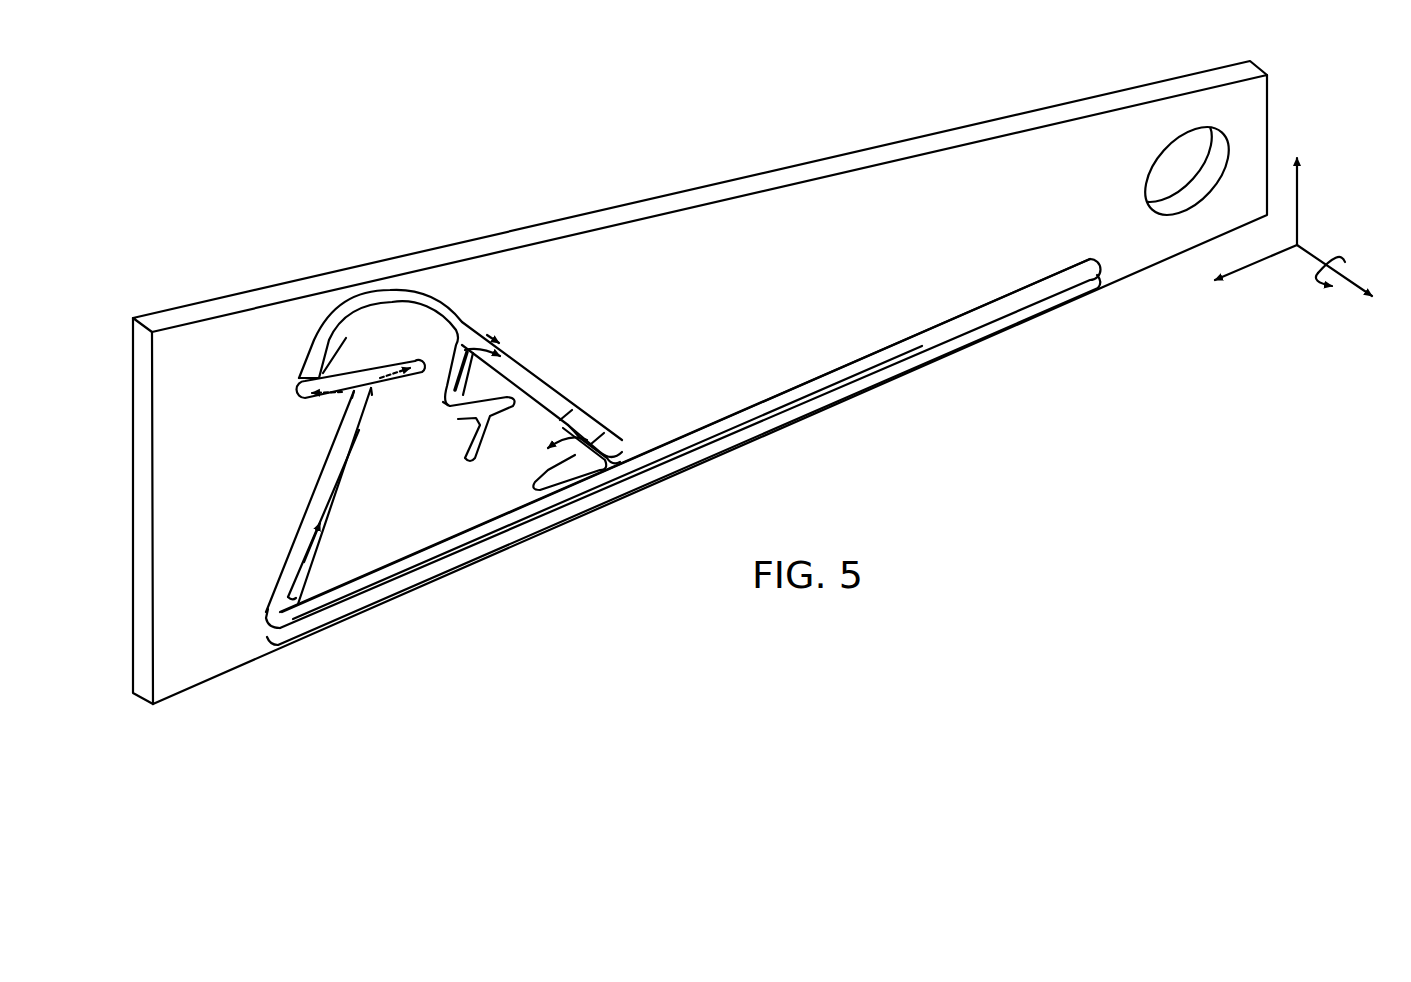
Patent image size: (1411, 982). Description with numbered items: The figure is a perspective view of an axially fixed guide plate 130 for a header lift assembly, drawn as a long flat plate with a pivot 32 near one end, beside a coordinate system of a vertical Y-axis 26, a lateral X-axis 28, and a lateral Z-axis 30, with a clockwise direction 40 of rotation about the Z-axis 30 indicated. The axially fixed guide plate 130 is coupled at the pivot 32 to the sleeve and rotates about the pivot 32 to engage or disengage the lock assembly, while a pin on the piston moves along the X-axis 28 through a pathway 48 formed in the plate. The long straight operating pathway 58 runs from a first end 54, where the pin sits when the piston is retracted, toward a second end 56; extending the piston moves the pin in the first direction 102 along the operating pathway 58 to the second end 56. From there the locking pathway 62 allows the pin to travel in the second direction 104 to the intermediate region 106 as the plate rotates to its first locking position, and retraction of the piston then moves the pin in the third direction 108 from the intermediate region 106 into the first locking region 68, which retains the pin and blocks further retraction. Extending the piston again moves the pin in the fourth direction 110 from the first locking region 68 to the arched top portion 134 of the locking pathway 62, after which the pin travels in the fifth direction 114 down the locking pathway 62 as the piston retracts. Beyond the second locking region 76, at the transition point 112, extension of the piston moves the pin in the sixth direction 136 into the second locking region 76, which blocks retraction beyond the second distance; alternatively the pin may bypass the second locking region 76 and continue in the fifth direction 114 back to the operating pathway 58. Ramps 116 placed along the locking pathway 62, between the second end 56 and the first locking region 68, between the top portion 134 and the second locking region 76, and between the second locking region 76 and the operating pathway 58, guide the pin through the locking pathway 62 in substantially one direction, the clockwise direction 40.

The axially fixed guide plate 130 is at (1020, 140).
The pivot 32 is at (1172, 150).
The Y-axis 26 is at (1297, 202).
The X-axis 28 is at (1255, 264).
The Z-axis 30 is at (1357, 289).
The clockwise direction 40 is at (1347, 262).
The operating pathway 58 is at (684, 430).
The pathway 48 is at (997, 309).
The first direction 102 is at (882, 357).
The first end 54 is at (1080, 266).
The second end 56 is at (262, 620).
The second direction 104 is at (292, 548).
The locking pathway 62 is at (333, 495).
The top portion 134 is at (372, 297).
The fifth direction 114 is at (425, 297).
The ramps 116 is at (470, 313).
The transition point 112 is at (620, 427).
The second locking region 76 is at (503, 367).
The sixth direction 136 is at (545, 462).
The intermediate region 106 is at (350, 403).
The third direction 108 is at (390, 382).
The first locking region 68 is at (425, 360).
The fourth direction 110 is at (309, 377).